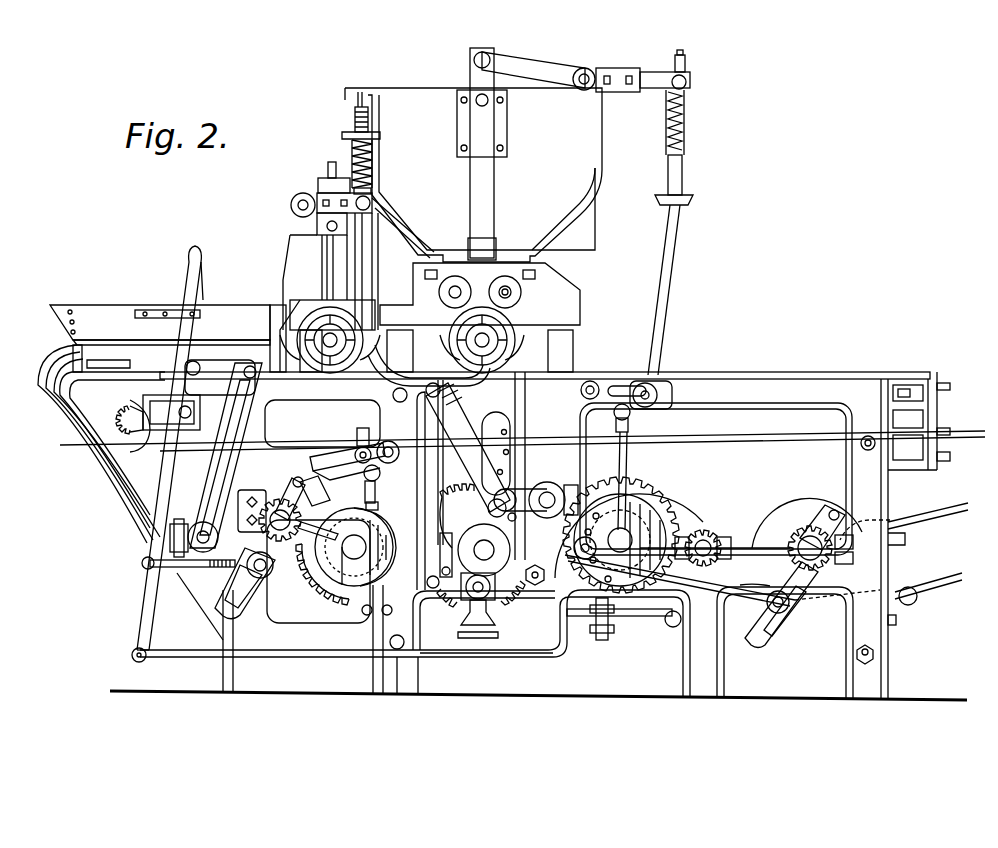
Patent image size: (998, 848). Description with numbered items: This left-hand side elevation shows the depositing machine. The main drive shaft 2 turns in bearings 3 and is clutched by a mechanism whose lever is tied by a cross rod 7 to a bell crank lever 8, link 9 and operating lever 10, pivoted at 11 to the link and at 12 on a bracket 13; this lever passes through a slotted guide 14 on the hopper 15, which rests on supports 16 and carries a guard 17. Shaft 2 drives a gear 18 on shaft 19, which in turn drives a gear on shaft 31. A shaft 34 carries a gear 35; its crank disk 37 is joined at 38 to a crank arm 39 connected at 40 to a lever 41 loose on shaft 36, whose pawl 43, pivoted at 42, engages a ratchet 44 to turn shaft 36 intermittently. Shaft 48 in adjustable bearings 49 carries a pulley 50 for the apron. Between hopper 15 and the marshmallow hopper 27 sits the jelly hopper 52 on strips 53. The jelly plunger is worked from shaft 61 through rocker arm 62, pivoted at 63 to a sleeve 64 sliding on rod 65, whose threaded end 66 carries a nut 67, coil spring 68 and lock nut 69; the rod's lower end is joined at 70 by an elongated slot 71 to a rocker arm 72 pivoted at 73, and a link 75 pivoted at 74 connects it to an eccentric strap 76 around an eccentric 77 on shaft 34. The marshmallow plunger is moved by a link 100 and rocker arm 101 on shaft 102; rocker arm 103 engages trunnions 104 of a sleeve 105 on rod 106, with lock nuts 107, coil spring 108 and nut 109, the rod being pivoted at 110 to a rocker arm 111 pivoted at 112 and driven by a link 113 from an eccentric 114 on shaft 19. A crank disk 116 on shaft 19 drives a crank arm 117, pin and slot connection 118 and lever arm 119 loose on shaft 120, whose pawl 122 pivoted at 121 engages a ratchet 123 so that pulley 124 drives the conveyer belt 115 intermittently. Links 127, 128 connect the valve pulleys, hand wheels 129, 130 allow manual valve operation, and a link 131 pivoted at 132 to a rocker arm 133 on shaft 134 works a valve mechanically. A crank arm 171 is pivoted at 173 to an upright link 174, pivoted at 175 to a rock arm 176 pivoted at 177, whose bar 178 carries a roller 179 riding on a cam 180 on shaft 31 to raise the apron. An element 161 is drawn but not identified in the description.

The main drive shaft 2 is at (703, 540).
The bearings 3 is at (732, 540).
The cross rod 7 is at (668, 626).
The bell crank lever 8 is at (636, 616).
The longitudinally extending link 9 is at (472, 657).
The operating lever 10 is at (140, 612).
The pivot 11 is at (133, 652).
The pivot 12 is at (142, 560).
The bracket 13 is at (165, 568).
The slotted guide 14 is at (150, 310).
The hopper 15 is at (85, 308).
The supports 16 is at (72, 355).
The guard 17 is at (44, 386).
The gear 18 is at (590, 490).
The shaft 19 is at (622, 540).
The main hopper 27 is at (585, 141).
The shaft 31 is at (449, 556).
The shaft 34 is at (278, 330).
The gear 35 is at (354, 508).
The shaft 36 is at (286, 490).
The crank disk 37 is at (350, 560).
The crank arm connection 38 is at (325, 565).
The crank arm 39 is at (296, 578).
The pin and slot connection 40 is at (252, 598).
The lever 41 is at (258, 520).
The pawl pivot 42 is at (290, 490).
The pawl 43 is at (305, 510).
The ratchet 44 is at (318, 526).
The shaft 48 is at (176, 408).
The adjustable bearings 49 is at (165, 476).
The pulley 50 is at (150, 438).
The hopper 52 is at (300, 240).
The longitudinally extending strips 53 is at (300, 318).
The shaft 61 is at (295, 202).
The rocker arm 62 is at (327, 185).
The pivotal connection 63 is at (371, 203).
The sleeve 64 is at (372, 190).
The rod 65 is at (380, 263).
The threaded upper end 66 is at (369, 117).
The nut 67 is at (381, 136).
The coil spring 68 is at (373, 158).
The lock nut 69 is at (382, 214).
The pivotal connection 70 is at (360, 447).
The elongated slot 71 is at (335, 458).
The rocker arm 72 is at (308, 464).
The pivot 73 is at (396, 458).
The pivotal connection 74 is at (380, 475).
The link 75 is at (376, 495).
The eccentric strap 76 is at (379, 510).
The eccentric 77 is at (392, 552).
The link 100 is at (480, 85).
The rocker arm 101 is at (537, 66).
The shaft 102 is at (588, 72).
The rocker arm 103 is at (642, 70).
The trunnions 104 is at (688, 86).
The sleeve 105 is at (690, 74).
The rod 106 is at (668, 252).
The lock nuts 107 is at (686, 60).
The coil spring 108 is at (686, 126).
The nut 109 is at (693, 200).
The pivotal connection 110 is at (655, 383).
The rocker arm 111 is at (620, 385).
The pivot 112 is at (591, 379).
The link 113 is at (628, 455).
The eccentric 114 is at (676, 522).
The conveyer belt 115 is at (905, 518).
The crank disk 116 is at (580, 575).
The crank arm 117 is at (594, 622).
The pin and slot connection 118 is at (786, 612).
The lever arm 119 is at (768, 632).
The shaft 120 is at (800, 540).
The pawl pivot 121 is at (830, 510).
The pawl 122 is at (845, 545).
The ratchet 123 is at (832, 562).
The pulley 124 is at (810, 588).
The link 127 is at (312, 385).
The link 128 is at (500, 372).
The hand wheel 129 is at (328, 292).
The hand wheel 130 is at (500, 322).
The link 131 is at (470, 455).
The pivotal connection 132 is at (490, 505).
The rocker arm 133 is at (530, 492).
The shaft 134 is at (548, 482).
The pivot 161 is at (198, 530).
The crank arm 171 is at (420, 397).
The pivotal connection 173 is at (450, 426).
The upright link 174 is at (462, 484).
The pivotal connection 175 is at (427, 583).
The rock arm 176 is at (446, 608).
The pivot 177 is at (535, 586).
The bar 178 is at (498, 608).
The roller 179 is at (470, 522).
The cam 180 is at (526, 517).